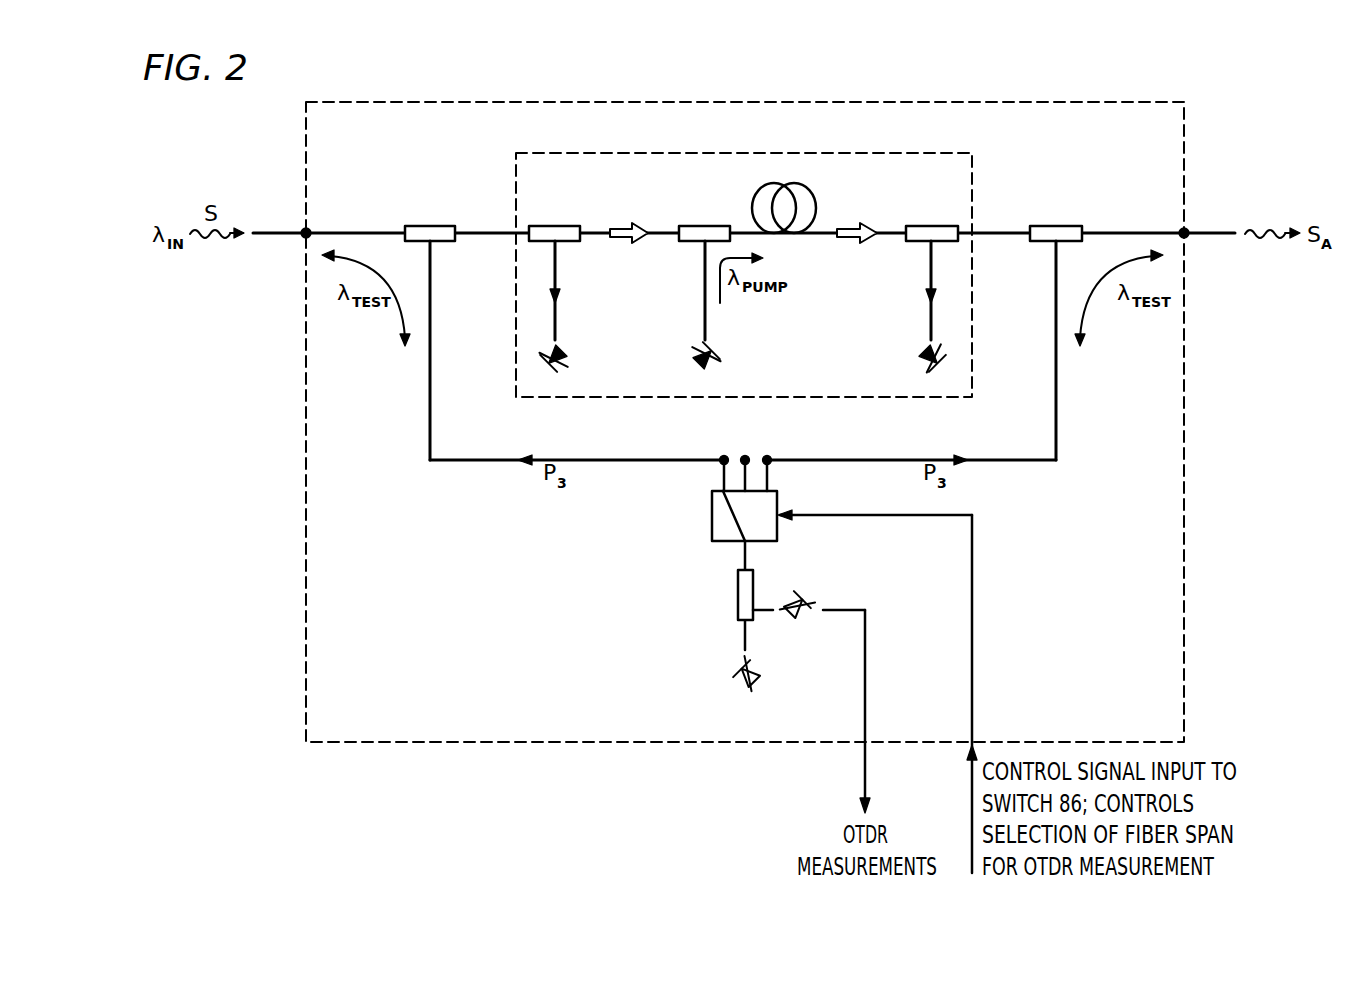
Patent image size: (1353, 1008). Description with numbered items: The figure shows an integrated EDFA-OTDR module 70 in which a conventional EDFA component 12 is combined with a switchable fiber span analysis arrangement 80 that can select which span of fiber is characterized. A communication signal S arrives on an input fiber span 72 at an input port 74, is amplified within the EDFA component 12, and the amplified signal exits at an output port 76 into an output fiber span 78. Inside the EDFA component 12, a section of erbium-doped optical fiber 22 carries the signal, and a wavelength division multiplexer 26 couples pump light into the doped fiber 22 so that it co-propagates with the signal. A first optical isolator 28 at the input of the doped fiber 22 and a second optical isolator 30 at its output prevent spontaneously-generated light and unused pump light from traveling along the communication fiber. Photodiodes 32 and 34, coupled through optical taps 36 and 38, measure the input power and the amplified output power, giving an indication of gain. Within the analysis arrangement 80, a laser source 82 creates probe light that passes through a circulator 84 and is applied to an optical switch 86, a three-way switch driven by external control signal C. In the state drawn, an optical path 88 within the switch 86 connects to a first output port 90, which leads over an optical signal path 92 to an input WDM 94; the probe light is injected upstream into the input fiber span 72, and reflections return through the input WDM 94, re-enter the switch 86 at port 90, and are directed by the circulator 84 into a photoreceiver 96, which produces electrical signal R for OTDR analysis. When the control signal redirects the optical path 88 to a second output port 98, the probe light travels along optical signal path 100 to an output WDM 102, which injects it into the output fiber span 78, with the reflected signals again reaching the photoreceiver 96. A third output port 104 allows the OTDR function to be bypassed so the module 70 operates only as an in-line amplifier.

The EDFA component 12 is at (680, 153).
The erbium-doped optical fiber 22 is at (815, 205).
The wavelength division multiplexer 26 is at (697, 226).
The first optical isolator 28 is at (628, 242).
The second optical isolator 30 is at (853, 242).
The photodiode 32 is at (566, 360).
The photodiode 34 is at (916, 360).
The optical tap 36 is at (547, 226).
The optical tap 38 is at (924, 226).
The integrated EDFA-OTDR module 70 is at (306, 696).
The input fiber span 72 is at (283, 232).
The input port 74 is at (302, 238).
The output port 76 is at (1188, 238).
The output fiber span 78 is at (1212, 232).
The switchable fiber span analysis arrangement 80 is at (618, 589).
The laser source 82 is at (738, 680).
The circulator 84 is at (736, 598).
The optical switch 86 is at (780, 498).
The optical path 88 is at (728, 515).
The first output port 90 is at (722, 456).
The optical signal path 92 is at (467, 462).
The input WDM 94 is at (422, 226).
The photoreceiver 96 is at (791, 612).
The second output port 98 is at (769, 456).
The optical signal path 100 is at (1000, 462).
The output WDM 102 is at (1046, 226).
The third output port 104 is at (745, 455).